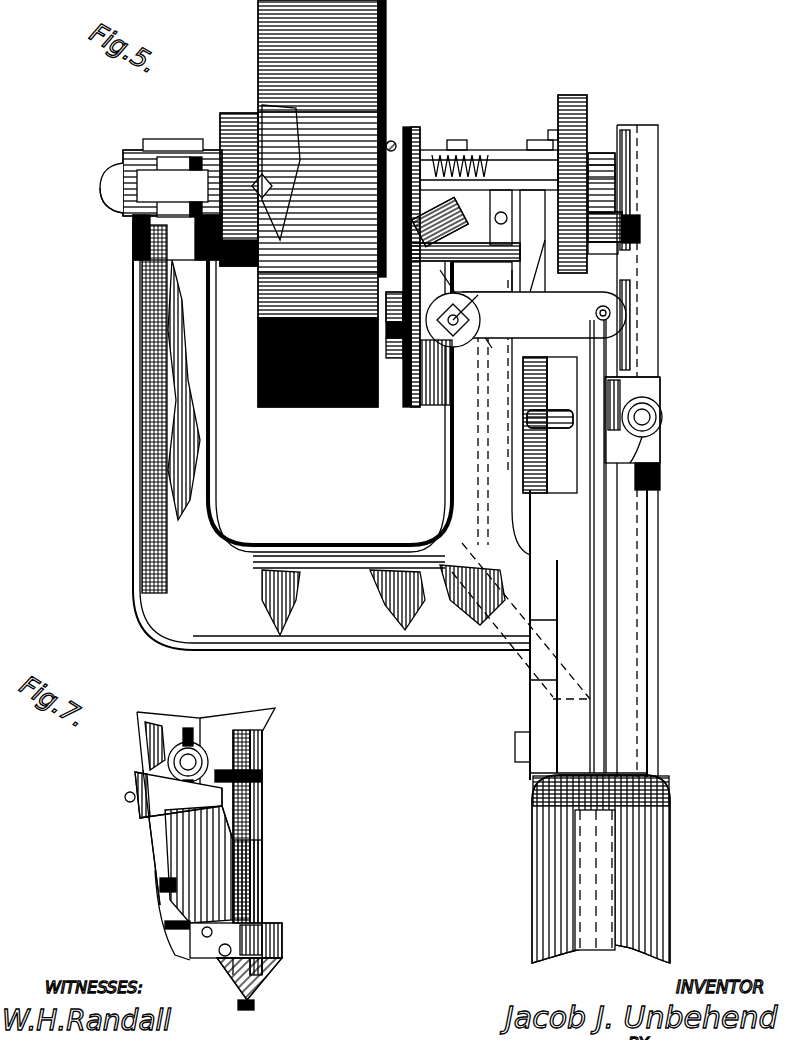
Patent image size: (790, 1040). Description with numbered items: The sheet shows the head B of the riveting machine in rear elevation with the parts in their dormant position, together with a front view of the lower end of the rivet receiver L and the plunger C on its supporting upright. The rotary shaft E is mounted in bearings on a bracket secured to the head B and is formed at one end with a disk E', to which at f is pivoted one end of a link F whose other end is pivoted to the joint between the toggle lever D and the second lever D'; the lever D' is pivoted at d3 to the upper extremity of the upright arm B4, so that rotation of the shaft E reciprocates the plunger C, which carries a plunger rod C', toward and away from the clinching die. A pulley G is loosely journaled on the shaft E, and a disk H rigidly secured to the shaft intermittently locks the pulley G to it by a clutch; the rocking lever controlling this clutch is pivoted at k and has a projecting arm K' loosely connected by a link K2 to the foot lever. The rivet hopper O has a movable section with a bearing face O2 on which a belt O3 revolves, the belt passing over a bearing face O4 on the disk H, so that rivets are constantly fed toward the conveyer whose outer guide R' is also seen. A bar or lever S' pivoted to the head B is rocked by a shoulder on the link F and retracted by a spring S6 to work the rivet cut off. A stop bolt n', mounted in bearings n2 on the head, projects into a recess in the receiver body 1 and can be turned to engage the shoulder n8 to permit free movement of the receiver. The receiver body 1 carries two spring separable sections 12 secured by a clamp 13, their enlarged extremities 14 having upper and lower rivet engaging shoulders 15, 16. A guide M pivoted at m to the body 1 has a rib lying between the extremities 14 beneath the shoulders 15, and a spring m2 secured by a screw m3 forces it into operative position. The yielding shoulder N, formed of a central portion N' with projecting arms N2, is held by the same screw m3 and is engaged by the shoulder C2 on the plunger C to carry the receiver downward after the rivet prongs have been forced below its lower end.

In FIG. 5, the pulley G is at (319, 203).
In FIG. 5, the rotary shaft E is at (146, 179).
In FIG. 5, the disk H is at (400, 140).
In FIG. 5, the rivet hopper O is at (425, 380).
In FIG. 5, the bearing face O2 is at (420, 364).
In FIG. 5, the belt O3 is at (414, 128).
In FIG. 5, the bearing face O4 is at (418, 126).
In FIG. 5, the disk E' is at (572, 171).
In FIG. 5, the second lever D' is at (608, 151).
In FIG. 5, the pivot d3 is at (613, 172).
In FIG. 5, the link F is at (612, 228).
In FIG. 5, the pivot f is at (630, 232).
In FIG. 5, the upright arm B4 is at (628, 218).
In FIG. 5, the lever D is at (645, 451).
In FIG. 5, the pivot k is at (453, 312).
In FIG. 5, the projecting arm K' is at (544, 315).
In FIG. 5, the link K2 is at (607, 618).
In FIG. 5, the bar or lever S' is at (554, 425).
In FIG. 5, the spring S6 is at (560, 410).
In FIG. 5, the stop bolt n' is at (651, 420).
In FIG. 5, the bearings n2 is at (655, 392).
In FIG. 5, the shoulder n8 is at (648, 433).
In FIG. 5, the outer guide R' is at (521, 621).
In FIG. 5, the head B is at (672, 848).
In FIG. 7, the body or frame 1 is at (145, 735).
In FIG. 7, the clamp 13 is at (193, 748).
In FIG. 7, the plunger C is at (237, 828).
In FIG. 7, the shoulder C2 is at (236, 775).
In FIG. 7, the plunger rod C' is at (285, 853).
In FIG. 7, the yielding shoulder N is at (162, 791).
In FIG. 7, the screw m3 is at (127, 800).
In FIG. 7, the central portion N' is at (160, 821).
In FIG. 7, the projecting arms N2 is at (216, 794).
In FIG. 7, the spring m2 is at (153, 850).
In FIG. 7, the spring separable sections 12 is at (185, 855).
In FIG. 7, the pivot m is at (162, 886).
In FIG. 7, the guide M is at (172, 930).
In FIG. 7, the rivet receiver L is at (284, 926).
In FIG. 7, the enlarged extremities 14 is at (264, 930).
In FIG. 7, the upper rivet engaging shoulders 15 is at (264, 936).
In FIG. 7, the lower rivet engaging shoulders 16 is at (230, 976).